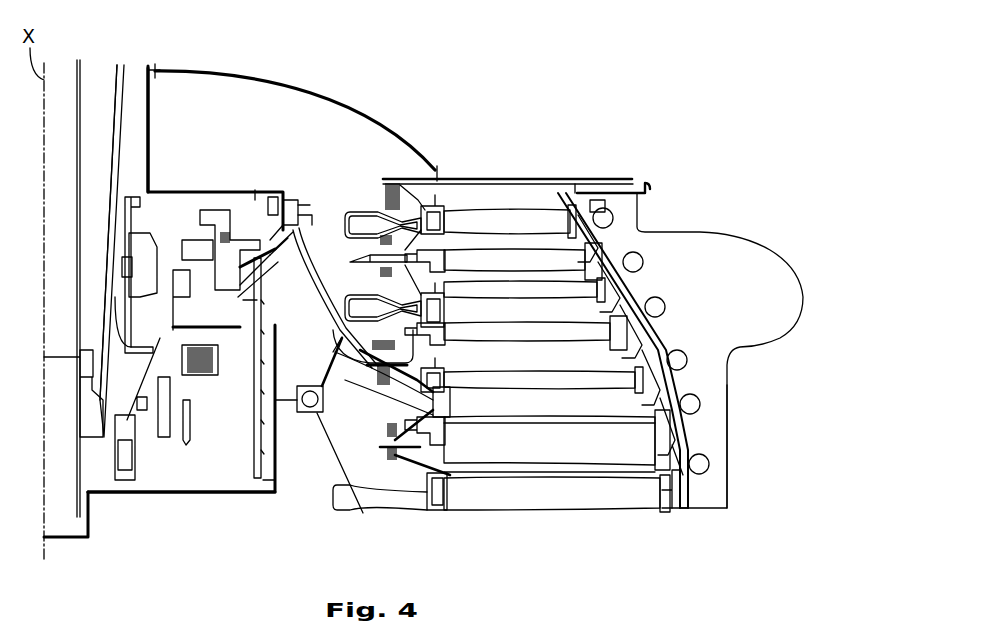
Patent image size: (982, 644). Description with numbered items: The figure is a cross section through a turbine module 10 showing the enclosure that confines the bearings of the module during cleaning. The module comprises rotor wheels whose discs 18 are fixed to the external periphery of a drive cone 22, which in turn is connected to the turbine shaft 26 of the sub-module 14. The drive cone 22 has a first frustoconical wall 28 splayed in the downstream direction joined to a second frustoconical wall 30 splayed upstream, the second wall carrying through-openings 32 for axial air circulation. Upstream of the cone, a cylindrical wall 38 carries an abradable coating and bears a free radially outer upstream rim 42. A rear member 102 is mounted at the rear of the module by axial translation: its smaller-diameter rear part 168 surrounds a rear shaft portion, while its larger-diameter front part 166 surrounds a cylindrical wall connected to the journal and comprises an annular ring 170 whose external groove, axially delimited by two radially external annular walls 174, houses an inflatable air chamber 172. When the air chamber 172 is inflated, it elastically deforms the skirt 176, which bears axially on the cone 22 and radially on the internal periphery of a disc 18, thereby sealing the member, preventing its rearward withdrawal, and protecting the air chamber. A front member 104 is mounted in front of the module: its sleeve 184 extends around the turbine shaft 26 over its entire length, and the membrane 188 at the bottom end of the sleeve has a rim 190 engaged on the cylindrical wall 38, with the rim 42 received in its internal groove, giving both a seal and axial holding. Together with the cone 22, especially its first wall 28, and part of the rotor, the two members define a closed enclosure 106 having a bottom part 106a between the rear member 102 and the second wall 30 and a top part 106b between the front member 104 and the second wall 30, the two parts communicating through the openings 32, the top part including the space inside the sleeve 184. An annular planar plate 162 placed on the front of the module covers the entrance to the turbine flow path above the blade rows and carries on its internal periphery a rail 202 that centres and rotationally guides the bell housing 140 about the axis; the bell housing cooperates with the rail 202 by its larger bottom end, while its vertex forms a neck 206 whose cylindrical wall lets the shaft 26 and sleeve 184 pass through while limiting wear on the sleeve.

The module 10 is at (575, 128).
The sub-module 14 is at (118, 100).
The turbine shaft 26 is at (108, 232).
The disc 18 is at (362, 400).
The drive cone 22 is at (313, 282).
The first frustoconical wall 28 is at (316, 280).
The second frustoconical wall 30 is at (233, 215).
The through-openings 32 is at (272, 262).
The cylindrical wall 38 is at (272, 195).
The radially outer upstream annular rim 42 is at (287, 217).
The rear member 102 is at (238, 506).
The front member 104 is at (163, 104).
The enclosure 106 is at (162, 492).
The bottom part of the enclosure 106a is at (164, 409).
The top part of the enclosure 106b is at (165, 215).
The bell housing 140 is at (360, 117).
The plate 162 is at (608, 178).
The front part of the body 166 is at (258, 478).
The rear part of the body 168 is at (93, 522).
The annular ring 170 is at (272, 405).
The inflatable air chamber 172 is at (350, 486).
The radially external annular walls 174 is at (318, 385).
The skirt 176 is at (425, 368).
The sleeve 184 is at (153, 125).
The membrane 188 is at (255, 190).
The rim 190 is at (288, 218).
The rail 202 is at (437, 170).
The neck 206 is at (158, 70).